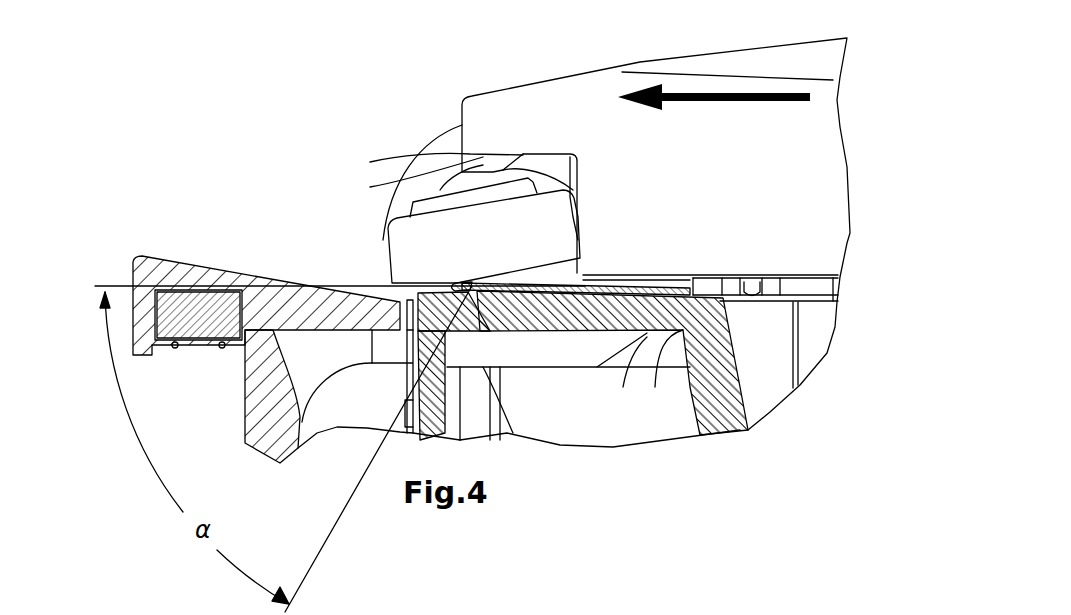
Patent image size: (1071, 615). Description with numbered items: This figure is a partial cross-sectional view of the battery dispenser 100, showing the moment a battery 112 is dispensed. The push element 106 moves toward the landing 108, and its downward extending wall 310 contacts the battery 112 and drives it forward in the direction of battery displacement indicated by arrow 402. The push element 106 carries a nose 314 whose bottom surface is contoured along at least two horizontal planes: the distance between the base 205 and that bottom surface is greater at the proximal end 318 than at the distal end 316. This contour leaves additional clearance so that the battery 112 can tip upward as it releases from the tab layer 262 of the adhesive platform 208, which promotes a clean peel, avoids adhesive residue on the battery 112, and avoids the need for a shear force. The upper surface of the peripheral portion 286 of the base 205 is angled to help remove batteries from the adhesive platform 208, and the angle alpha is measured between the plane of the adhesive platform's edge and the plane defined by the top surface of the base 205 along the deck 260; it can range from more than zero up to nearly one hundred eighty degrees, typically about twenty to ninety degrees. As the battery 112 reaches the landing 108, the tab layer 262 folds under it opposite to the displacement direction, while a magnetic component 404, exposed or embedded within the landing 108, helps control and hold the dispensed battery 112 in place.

The battery dispenser 100 is at (208, 170).
The push element 106 is at (503, 122).
The landing 108 is at (137, 262).
The battery 112 is at (395, 236).
The base 205 is at (500, 425).
The adhesive platform 208 is at (660, 445).
The deck 260 is at (478, 283).
The tab layer 262 is at (490, 280).
The peripheral portion of the base 286 is at (400, 340).
The downward extending wall 310 is at (402, 150).
The nose 314 is at (430, 171).
The distal end 316 is at (427, 187).
The proximal end 318 is at (580, 163).
The arrow 402 is at (713, 90).
The magnetic component 404 is at (212, 318).